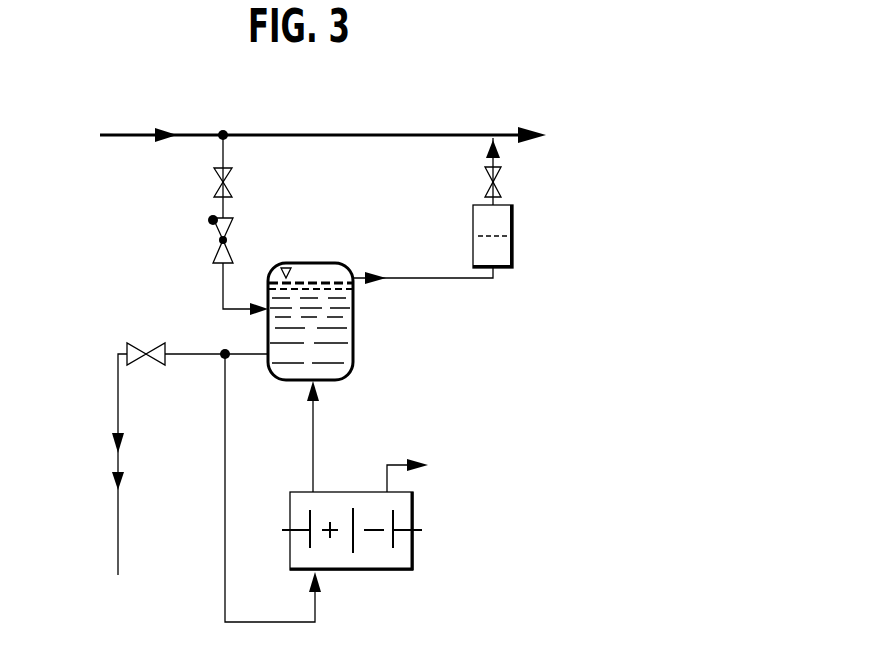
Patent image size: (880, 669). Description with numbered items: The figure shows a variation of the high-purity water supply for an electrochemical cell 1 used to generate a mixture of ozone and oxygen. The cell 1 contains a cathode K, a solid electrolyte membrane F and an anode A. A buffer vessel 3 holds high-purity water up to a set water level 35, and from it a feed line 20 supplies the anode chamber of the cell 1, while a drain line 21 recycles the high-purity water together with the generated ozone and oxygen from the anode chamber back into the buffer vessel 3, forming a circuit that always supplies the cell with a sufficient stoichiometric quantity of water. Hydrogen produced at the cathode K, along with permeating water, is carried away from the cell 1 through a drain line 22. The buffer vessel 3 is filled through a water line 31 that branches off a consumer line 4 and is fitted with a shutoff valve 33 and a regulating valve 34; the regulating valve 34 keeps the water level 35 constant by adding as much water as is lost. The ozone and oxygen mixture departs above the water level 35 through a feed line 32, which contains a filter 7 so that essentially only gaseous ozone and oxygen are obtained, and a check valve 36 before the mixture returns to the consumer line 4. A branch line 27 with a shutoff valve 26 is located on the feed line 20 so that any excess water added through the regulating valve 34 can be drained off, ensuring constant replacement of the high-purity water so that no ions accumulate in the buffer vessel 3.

The electrochemical cell 1 is at (428, 541).
The buffer vessel 3 is at (362, 339).
The consumer line 4 is at (304, 133).
The filter 7 is at (522, 222).
The feed line 20 is at (224, 558).
The drain line 21 is at (312, 456).
The drain line 22 is at (393, 479).
The shutoff valve 26 is at (128, 345).
The branch line 27 is at (189, 361).
The water line 31 is at (222, 305).
The feed line 32 is at (423, 270).
The shutoff valve 33 is at (215, 183).
The regulating valve 34 is at (214, 241).
The water level 35 is at (298, 279).
The check valve 36 is at (503, 181).
The anode A is at (305, 543).
The solid electrolyte membrane F is at (357, 512).
The cathode K is at (398, 545).